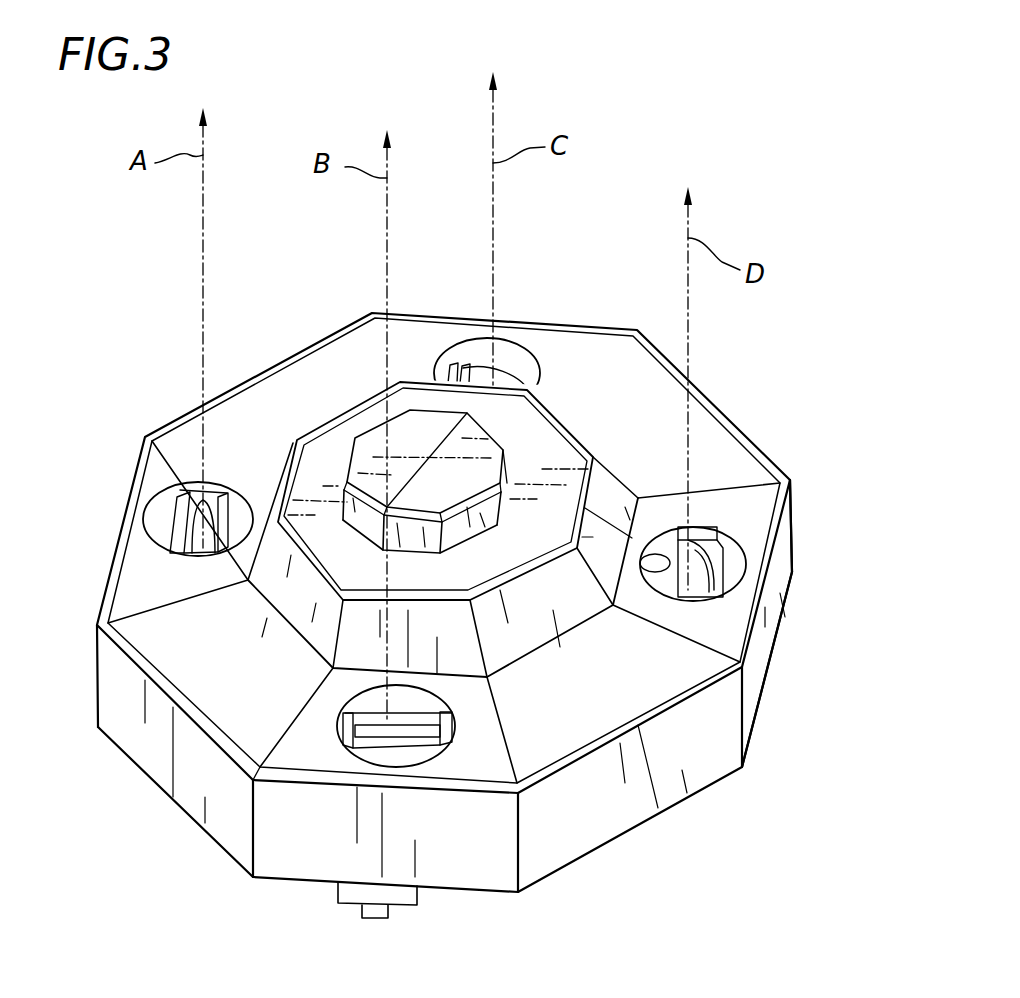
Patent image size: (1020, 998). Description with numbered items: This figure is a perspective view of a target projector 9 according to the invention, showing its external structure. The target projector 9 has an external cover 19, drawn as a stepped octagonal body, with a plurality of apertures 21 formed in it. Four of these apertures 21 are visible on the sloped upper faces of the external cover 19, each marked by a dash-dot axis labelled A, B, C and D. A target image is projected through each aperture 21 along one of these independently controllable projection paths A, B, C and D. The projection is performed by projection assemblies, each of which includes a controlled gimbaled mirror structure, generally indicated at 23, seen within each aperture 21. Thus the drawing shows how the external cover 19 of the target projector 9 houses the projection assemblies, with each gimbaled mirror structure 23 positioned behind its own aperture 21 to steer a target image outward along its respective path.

The target projector 9 is at (766, 418).
The external cover 19 is at (775, 606).
The apertures 21 is at (448, 358).
The controlled gimbaled mirror structure 23 is at (510, 348).